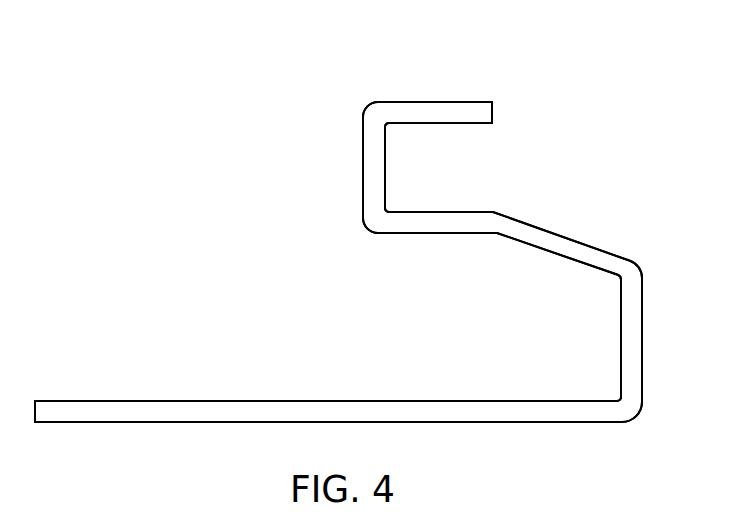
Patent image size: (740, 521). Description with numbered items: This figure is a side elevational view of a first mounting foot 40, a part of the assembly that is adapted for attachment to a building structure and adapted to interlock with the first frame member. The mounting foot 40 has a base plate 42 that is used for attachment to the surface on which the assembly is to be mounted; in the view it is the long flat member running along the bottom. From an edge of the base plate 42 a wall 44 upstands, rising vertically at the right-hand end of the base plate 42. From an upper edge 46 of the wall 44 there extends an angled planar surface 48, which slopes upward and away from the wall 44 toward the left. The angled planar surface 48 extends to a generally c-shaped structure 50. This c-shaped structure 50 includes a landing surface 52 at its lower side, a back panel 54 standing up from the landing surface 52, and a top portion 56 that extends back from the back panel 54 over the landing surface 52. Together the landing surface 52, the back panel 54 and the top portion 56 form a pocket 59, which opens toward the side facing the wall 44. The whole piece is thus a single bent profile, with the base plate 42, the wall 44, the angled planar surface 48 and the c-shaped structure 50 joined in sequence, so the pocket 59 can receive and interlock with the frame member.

The first mounting foot 40 is at (545, 68).
The base plate 42 is at (337, 402).
The wall 44 is at (643, 330).
The upper edge 46 is at (637, 272).
The angled planar surface 48 is at (563, 233).
The generally c-shaped structure 50 is at (320, 95).
The landing surface 52 is at (432, 212).
The back panel 54 is at (362, 167).
The top portion 56 is at (432, 103).
The pocket 59 is at (480, 142).